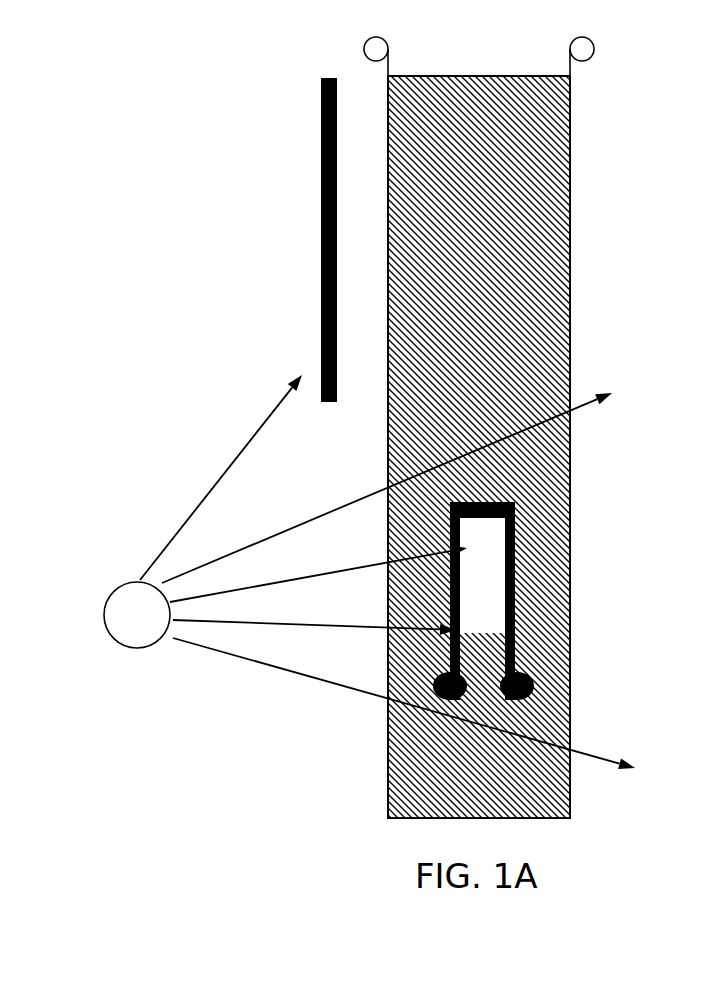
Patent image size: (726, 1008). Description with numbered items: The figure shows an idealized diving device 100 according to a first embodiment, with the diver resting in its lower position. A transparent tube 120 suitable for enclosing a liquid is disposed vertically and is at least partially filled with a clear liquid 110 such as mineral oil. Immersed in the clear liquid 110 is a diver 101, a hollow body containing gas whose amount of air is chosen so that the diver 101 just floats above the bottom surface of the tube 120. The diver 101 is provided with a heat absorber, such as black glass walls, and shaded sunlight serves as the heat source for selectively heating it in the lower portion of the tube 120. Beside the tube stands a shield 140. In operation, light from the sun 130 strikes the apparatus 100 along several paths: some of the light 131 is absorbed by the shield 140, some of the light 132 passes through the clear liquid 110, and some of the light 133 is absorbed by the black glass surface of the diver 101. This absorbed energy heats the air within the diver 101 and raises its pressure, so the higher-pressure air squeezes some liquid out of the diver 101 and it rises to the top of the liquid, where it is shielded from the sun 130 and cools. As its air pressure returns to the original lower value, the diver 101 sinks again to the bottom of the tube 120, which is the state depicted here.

The diving device 100 is at (532, 439).
The diver 101 is at (507, 583).
The clear liquid 110 is at (479, 447).
The transparent tube 120 is at (571, 225).
The sun 130 is at (157, 627).
The light 131 is at (221, 477).
The light 132 is at (412, 488).
The light 133 is at (402, 658).
The shield 140 is at (305, 237).